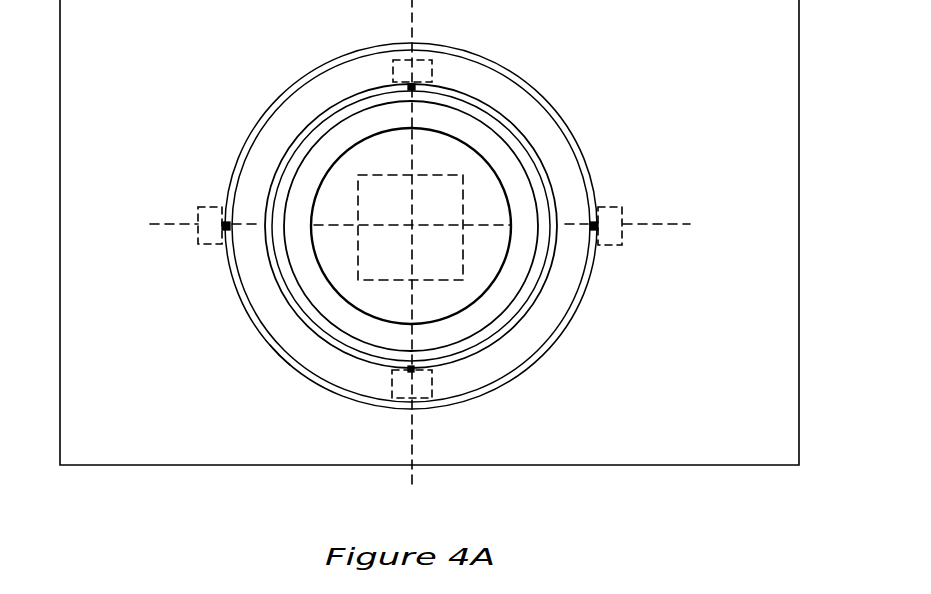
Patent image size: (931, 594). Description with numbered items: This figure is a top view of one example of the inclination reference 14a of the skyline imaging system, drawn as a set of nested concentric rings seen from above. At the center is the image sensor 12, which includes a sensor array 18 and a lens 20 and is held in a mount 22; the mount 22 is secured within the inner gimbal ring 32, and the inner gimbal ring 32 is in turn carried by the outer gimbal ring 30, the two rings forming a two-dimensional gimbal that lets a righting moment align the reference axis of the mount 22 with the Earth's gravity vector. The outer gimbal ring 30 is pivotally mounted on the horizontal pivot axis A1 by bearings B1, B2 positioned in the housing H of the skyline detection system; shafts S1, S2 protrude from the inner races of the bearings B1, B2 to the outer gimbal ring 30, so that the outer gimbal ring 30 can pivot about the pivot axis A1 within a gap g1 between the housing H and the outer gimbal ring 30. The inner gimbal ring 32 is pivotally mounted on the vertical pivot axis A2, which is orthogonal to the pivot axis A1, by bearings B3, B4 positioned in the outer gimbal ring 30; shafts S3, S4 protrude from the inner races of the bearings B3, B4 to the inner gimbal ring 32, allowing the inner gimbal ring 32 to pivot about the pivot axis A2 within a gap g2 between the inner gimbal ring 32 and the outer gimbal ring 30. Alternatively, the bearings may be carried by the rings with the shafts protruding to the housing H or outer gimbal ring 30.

The image sensor 12 is at (318, 196).
The mount 22 is at (325, 155).
The inner gimbal ring 32 is at (488, 120).
The outer gimbal ring 30 is at (545, 138).
The inclination reference 14a is at (278, 353).
The sensor array 18 is at (445, 275).
The lens 20 is at (455, 313).
The pivot axis A1 is at (643, 224).
The pivot axis A2 is at (412, 16).
The bearing B1 is at (606, 212).
The bearing B2 is at (205, 210).
The bearing B3 is at (402, 390).
The bearing B4 is at (416, 72).
The shaft S1 is at (596, 236).
The shaft S2 is at (226, 246).
The shaft S3 is at (422, 370).
The shaft S4 is at (435, 86).
The gap g1 is at (563, 332).
The gap g2 is at (487, 348).
The housing H is at (667, 401).